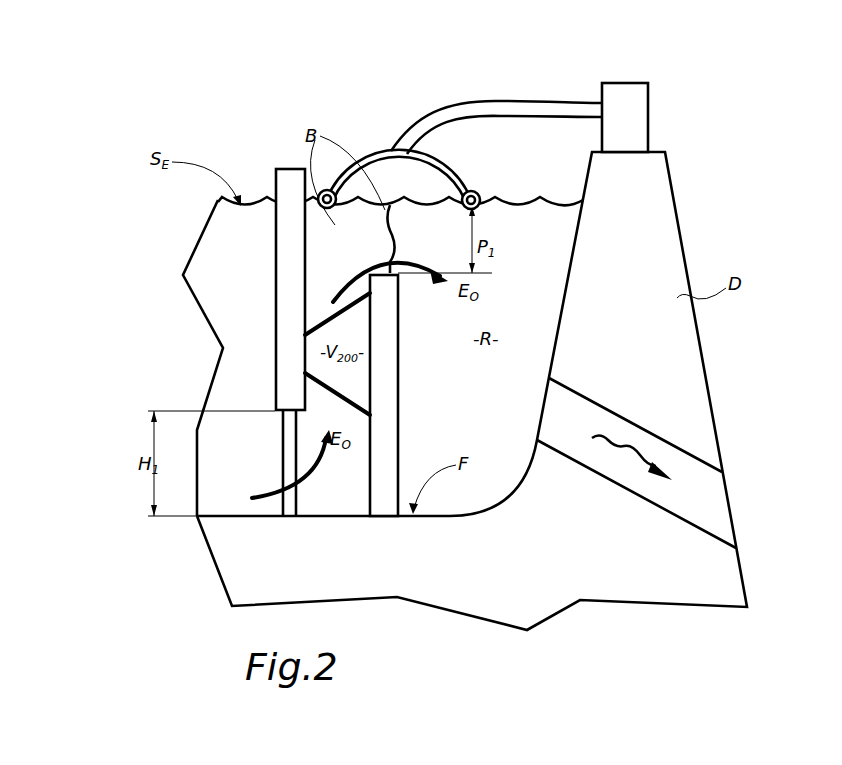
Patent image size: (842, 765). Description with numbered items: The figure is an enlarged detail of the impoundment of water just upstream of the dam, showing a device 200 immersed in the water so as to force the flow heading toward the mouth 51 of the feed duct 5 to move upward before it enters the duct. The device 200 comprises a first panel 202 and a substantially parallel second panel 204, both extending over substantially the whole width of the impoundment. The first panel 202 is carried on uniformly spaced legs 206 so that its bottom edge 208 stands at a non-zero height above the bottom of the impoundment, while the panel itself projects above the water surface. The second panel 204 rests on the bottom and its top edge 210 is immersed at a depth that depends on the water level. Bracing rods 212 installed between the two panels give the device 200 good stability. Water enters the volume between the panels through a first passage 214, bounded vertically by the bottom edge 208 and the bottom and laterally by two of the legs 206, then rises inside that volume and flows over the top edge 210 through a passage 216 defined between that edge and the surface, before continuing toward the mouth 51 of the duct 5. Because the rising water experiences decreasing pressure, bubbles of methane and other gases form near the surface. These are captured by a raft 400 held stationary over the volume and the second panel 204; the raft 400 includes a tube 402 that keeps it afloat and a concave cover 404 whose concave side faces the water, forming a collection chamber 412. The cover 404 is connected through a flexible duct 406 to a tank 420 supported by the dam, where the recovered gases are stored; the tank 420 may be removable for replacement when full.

The feed duct 5 is at (712, 505).
The mouth of the duct 51 is at (540, 414).
The device 200 is at (258, 343).
The first panel 202 is at (270, 175).
The second panel 204 is at (398, 368).
The legs 206 is at (285, 520).
The bottom edge of the panel 208 is at (290, 378).
The top edge of the panel 210 is at (320, 300).
The bracing rods 212 is at (300, 330).
The first passage 214 is at (272, 500).
The passage 216 is at (410, 239).
The raft 400 is at (364, 129).
The tube 402 is at (478, 192).
The concave cover 404 is at (447, 162).
The flexible duct 406 is at (505, 106).
The collection chamber 412 is at (399, 175).
The tank 420 is at (648, 118).